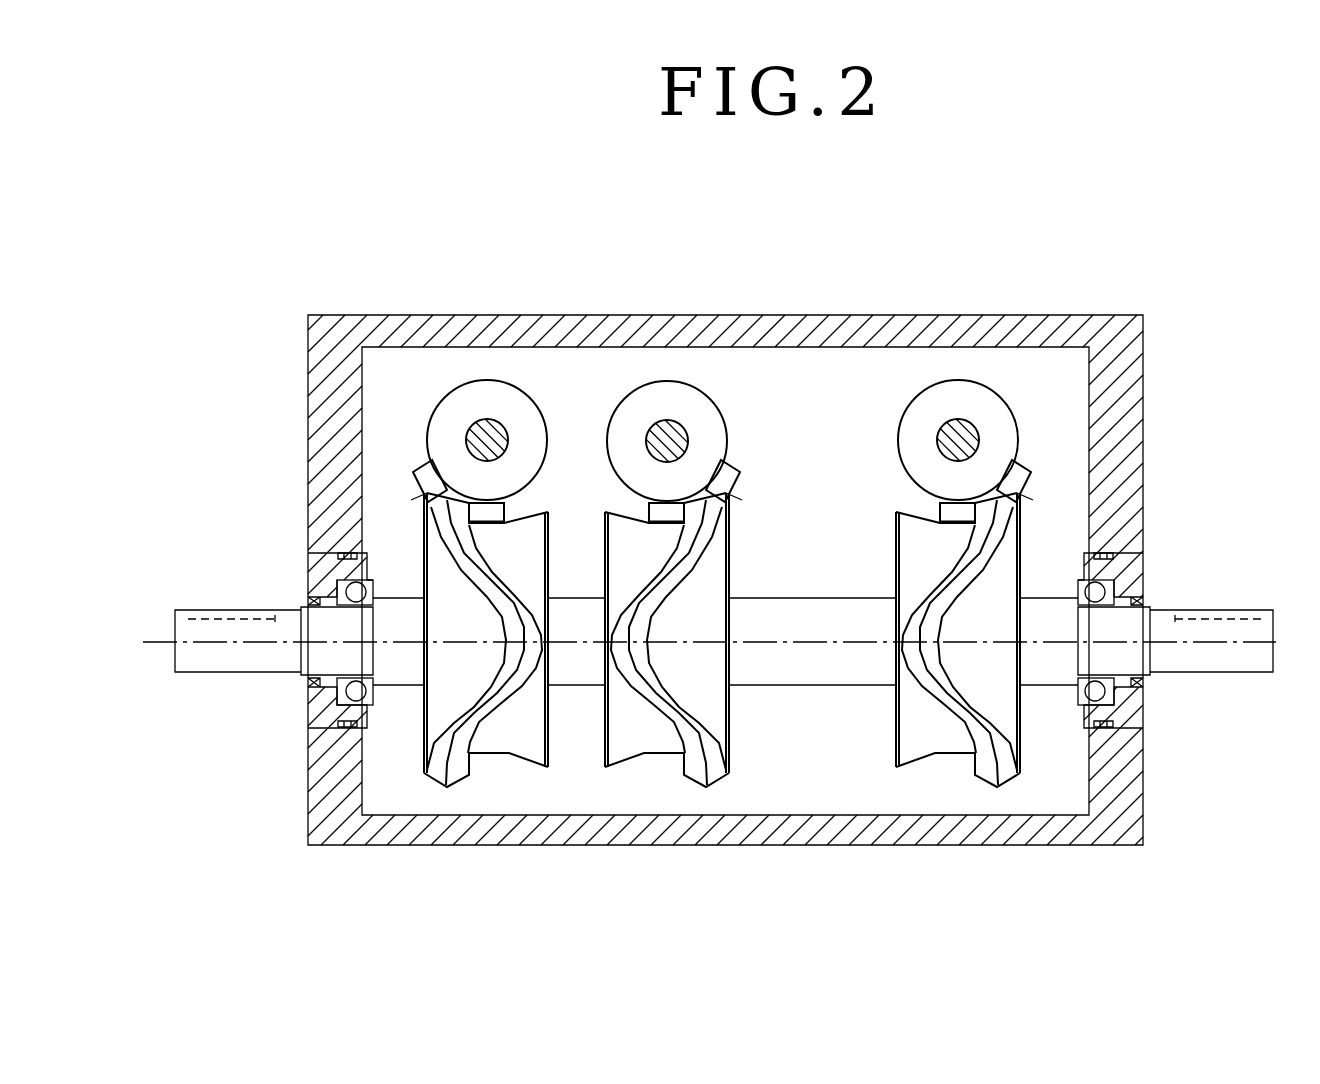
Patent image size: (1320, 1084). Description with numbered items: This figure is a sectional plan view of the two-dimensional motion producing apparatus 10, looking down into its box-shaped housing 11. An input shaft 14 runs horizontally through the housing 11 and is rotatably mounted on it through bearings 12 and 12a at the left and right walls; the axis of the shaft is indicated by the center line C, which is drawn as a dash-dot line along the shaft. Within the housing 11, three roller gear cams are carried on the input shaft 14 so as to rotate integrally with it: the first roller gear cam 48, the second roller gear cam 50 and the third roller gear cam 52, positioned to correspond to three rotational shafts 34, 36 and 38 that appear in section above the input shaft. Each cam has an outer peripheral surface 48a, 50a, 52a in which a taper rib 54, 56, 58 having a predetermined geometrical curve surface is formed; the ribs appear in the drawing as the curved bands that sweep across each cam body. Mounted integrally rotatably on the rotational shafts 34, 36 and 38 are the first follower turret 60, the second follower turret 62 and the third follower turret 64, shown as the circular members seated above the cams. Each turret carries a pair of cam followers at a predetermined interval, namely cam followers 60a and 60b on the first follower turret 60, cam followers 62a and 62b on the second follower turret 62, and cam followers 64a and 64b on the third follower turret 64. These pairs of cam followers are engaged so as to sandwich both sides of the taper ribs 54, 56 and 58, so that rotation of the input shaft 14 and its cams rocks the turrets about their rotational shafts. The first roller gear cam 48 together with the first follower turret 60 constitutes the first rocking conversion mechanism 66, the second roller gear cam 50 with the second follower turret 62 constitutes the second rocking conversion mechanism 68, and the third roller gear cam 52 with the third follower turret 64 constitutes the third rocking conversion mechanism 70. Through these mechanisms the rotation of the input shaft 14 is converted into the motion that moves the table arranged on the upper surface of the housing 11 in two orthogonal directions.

The two-dimensional motion producing apparatus 10 is at (1086, 291).
The housing 11 is at (320, 785).
The bearing 12 is at (342, 592).
The bearing 12a is at (1112, 692).
The input shaft 14 is at (198, 633).
The shaft center axis C is at (819, 645).
The rotational shaft 34 is at (505, 423).
The rotational shaft 36 is at (683, 423).
The rotational shaft 38 is at (992, 428).
The first roller gear cam 48 is at (466, 704).
The outer peripheral surface 48a is at (497, 758).
The second roller gear cam 50 is at (703, 704).
The outer peripheral surface 50a is at (630, 758).
The third roller gear cam 52 is at (937, 704).
The outer peripheral surface 52a is at (937, 758).
The taper rib 54 is at (452, 790).
The taper rib 56 is at (703, 790).
The taper rib 58 is at (1000, 790).
The first follower turret 60 is at (500, 376).
The cam follower 60a is at (424, 463).
The cam follower 60b is at (480, 511).
The second follower turret 62 is at (678, 376).
The cam follower 62a is at (662, 514).
The cam follower 62b is at (732, 468).
The third follower turret 64 is at (988, 376).
The cam follower 64a is at (937, 512).
The cam follower 64b is at (1030, 466).
The first rocking conversion mechanism 66 is at (408, 499).
The second rocking conversion mechanism 68 is at (745, 511).
The third rocking conversion mechanism 70 is at (1036, 508).